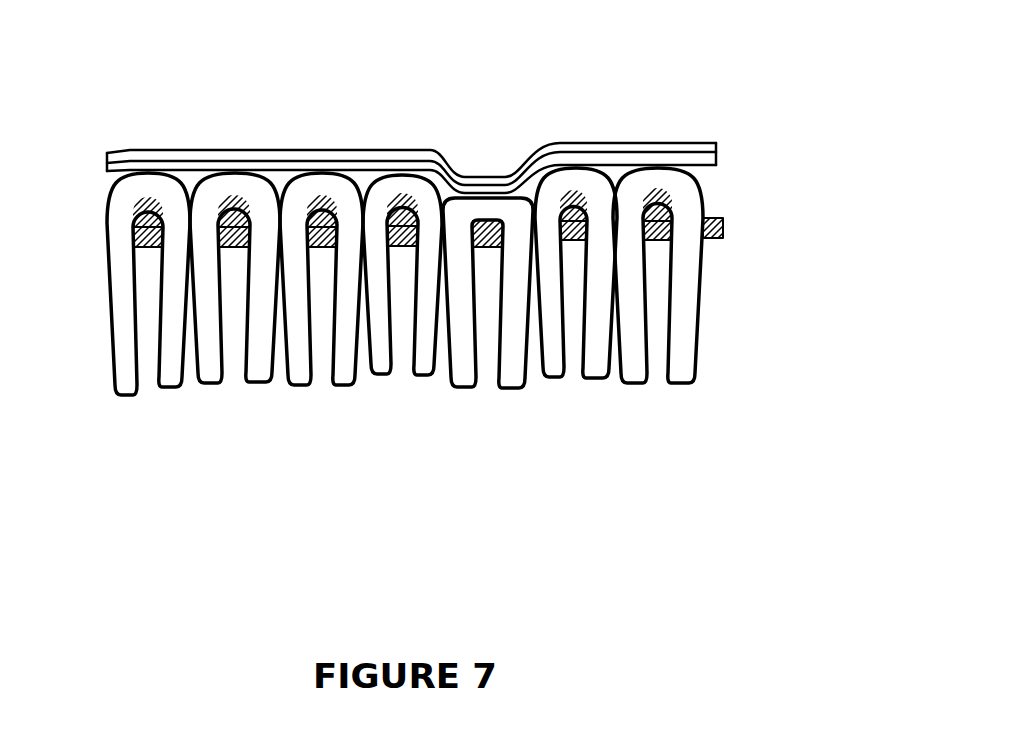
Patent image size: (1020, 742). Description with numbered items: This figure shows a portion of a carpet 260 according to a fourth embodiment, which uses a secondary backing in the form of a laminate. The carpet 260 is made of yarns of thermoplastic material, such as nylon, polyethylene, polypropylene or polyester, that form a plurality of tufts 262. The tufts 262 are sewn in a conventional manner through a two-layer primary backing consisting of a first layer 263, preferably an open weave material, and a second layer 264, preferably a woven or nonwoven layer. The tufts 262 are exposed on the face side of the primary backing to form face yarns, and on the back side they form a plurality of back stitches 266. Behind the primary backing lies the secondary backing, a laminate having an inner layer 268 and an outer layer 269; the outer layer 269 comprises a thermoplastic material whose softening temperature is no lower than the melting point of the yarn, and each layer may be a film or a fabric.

The carpet 260 is at (468, 80).
The tufts 262 is at (471, 238).
The first layer 263 is at (672, 197).
The second layer 264 is at (732, 228).
The back stitches 266 is at (250, 192).
The inner layer 268 is at (105, 172).
The outer layer 269 is at (185, 148).